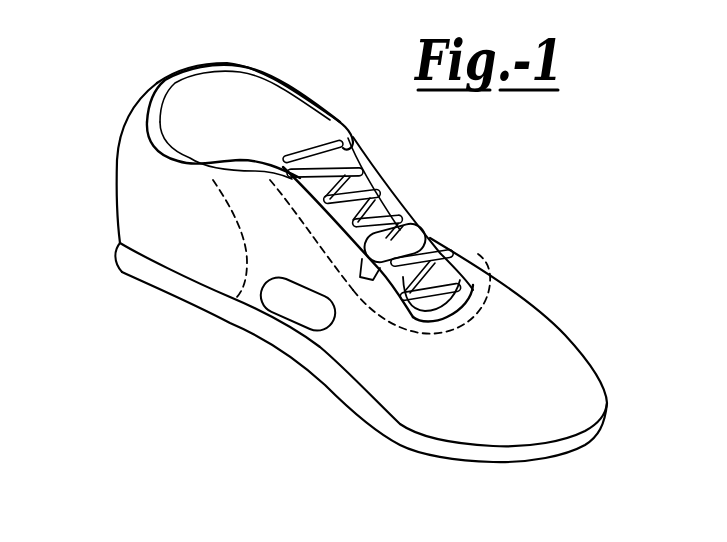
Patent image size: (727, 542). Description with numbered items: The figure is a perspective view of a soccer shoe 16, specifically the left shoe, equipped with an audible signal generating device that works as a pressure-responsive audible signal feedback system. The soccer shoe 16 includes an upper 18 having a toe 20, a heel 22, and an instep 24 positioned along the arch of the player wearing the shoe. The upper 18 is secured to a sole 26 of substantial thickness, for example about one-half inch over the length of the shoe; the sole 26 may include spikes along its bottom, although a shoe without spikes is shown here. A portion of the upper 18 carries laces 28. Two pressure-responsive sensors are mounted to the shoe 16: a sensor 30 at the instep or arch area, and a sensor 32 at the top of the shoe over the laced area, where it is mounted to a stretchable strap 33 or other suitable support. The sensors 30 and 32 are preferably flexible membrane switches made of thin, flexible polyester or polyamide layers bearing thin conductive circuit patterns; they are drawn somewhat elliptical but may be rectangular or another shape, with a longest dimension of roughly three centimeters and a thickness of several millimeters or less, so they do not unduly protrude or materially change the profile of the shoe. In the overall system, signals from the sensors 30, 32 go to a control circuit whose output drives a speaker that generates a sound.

The soccer shoe 16 is at (108, 138).
The upper 18 is at (267, 108).
The toe 20 is at (572, 409).
The heel 22 is at (122, 181).
The instep 24 is at (333, 343).
The sole 26 is at (401, 422).
The laces 28 is at (376, 194).
The sensor 30 is at (273, 295).
The sensor 32 is at (403, 244).
The stretchable strap 33 is at (418, 236).